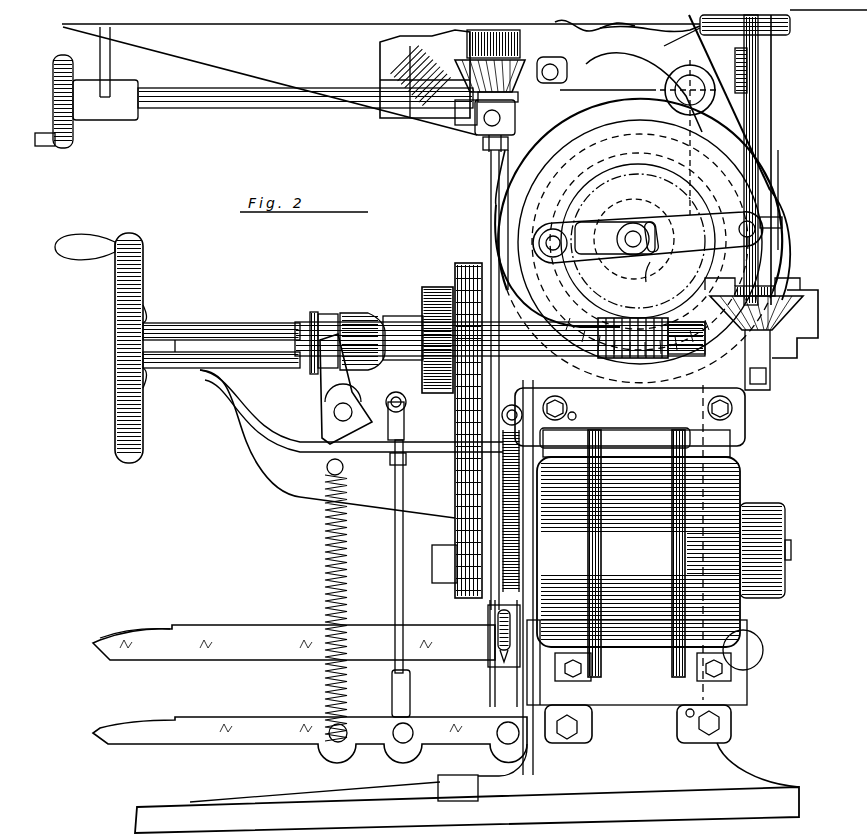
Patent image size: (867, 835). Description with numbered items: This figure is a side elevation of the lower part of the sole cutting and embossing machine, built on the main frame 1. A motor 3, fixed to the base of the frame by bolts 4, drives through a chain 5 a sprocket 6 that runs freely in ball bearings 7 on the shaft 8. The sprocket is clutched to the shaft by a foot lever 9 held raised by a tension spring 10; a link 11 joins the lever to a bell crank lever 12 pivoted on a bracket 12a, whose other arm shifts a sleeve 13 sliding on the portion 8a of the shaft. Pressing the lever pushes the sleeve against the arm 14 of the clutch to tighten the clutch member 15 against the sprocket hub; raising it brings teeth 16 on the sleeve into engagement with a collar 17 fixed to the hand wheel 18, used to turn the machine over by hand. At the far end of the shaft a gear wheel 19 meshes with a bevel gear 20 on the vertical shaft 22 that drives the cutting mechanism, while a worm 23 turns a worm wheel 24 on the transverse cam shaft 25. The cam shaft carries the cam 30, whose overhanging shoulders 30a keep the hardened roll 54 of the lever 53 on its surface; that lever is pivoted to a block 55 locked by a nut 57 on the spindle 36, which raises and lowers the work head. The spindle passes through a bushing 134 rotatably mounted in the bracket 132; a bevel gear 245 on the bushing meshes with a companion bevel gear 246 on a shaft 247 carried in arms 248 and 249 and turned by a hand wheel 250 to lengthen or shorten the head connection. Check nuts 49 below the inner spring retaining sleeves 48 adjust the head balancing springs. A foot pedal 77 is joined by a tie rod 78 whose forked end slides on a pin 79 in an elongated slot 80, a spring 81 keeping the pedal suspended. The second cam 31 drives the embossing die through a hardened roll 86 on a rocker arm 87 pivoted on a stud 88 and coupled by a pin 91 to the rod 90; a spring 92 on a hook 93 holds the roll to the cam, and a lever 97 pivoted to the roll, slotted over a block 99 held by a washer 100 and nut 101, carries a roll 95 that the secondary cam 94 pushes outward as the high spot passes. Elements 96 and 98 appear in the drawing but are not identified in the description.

The main frame 1 is at (738, 770).
The motor 3 is at (732, 486).
The bolts 4 is at (732, 730).
The chain 5 is at (454, 515).
The sprocket 6 is at (452, 286).
The ball bearings 7 is at (518, 282).
The shaft 8 is at (530, 320).
The portion of the shaft 8a is at (390, 322).
The foot lever 9 is at (242, 728).
The tension spring 10 is at (324, 568).
The link 11 is at (394, 568).
The bell crank lever 12 is at (368, 404).
The bracket 12a is at (270, 474).
The sleeve 13 is at (348, 314).
The arm of the clutch 14 is at (424, 296).
The clutch member 15 is at (418, 378).
The teeth 16 is at (342, 314).
The collar 17 is at (312, 306).
The hand wheel 18 is at (123, 350).
The gear wheel 19 is at (736, 340).
The bevel gear 20 is at (800, 340).
The vertical shaft 22 is at (772, 150).
The worm 23 is at (608, 340).
The worm wheel 24 is at (660, 328).
The cam shaft 25 is at (656, 236).
The cam 30 is at (548, 142).
The overhanging shoulders 30a is at (636, 152).
The second cam 31 is at (514, 198).
The spindle 36 is at (521, 42).
The inner spring retaining sleeves 48 is at (782, 20).
The check nuts 49 is at (735, 55).
The lever 53 is at (484, 150).
The hardened roll 54 is at (772, 178).
The block 55 is at (488, 140).
The nut 57 is at (492, 160).
The foot pedal 77 is at (216, 636).
The tie rod 78 is at (505, 410).
The pin 79 is at (510, 668).
The elongated slot 80 is at (500, 658).
The spring 81 is at (490, 614).
The hardened roll 86 is at (783, 222).
The rocker arm 87 is at (672, 42).
The stud 88 is at (697, 88).
The rod 90 is at (573, 24).
The pin 91 is at (560, 70).
The spring 92 is at (612, 26).
The hook 93 is at (568, 60).
The secondary cam 94 is at (648, 192).
The hardened roll 95 is at (549, 236).
The roller pin 96 is at (548, 250).
The lever 97 is at (592, 222).
The pivot 98 is at (739, 230).
The block 99 is at (647, 257).
The washer 100 is at (640, 227).
The nut 101 is at (632, 231).
The bracket 132 is at (381, 79).
The bushing 134 is at (505, 29).
The bevel gear 245 is at (525, 108).
The companion bevel gear 246 is at (476, 108).
The shaft 247 is at (268, 100).
The arm 248 is at (452, 114).
The arm 249 is at (145, 52).
The hand wheel 250 is at (70, 62).